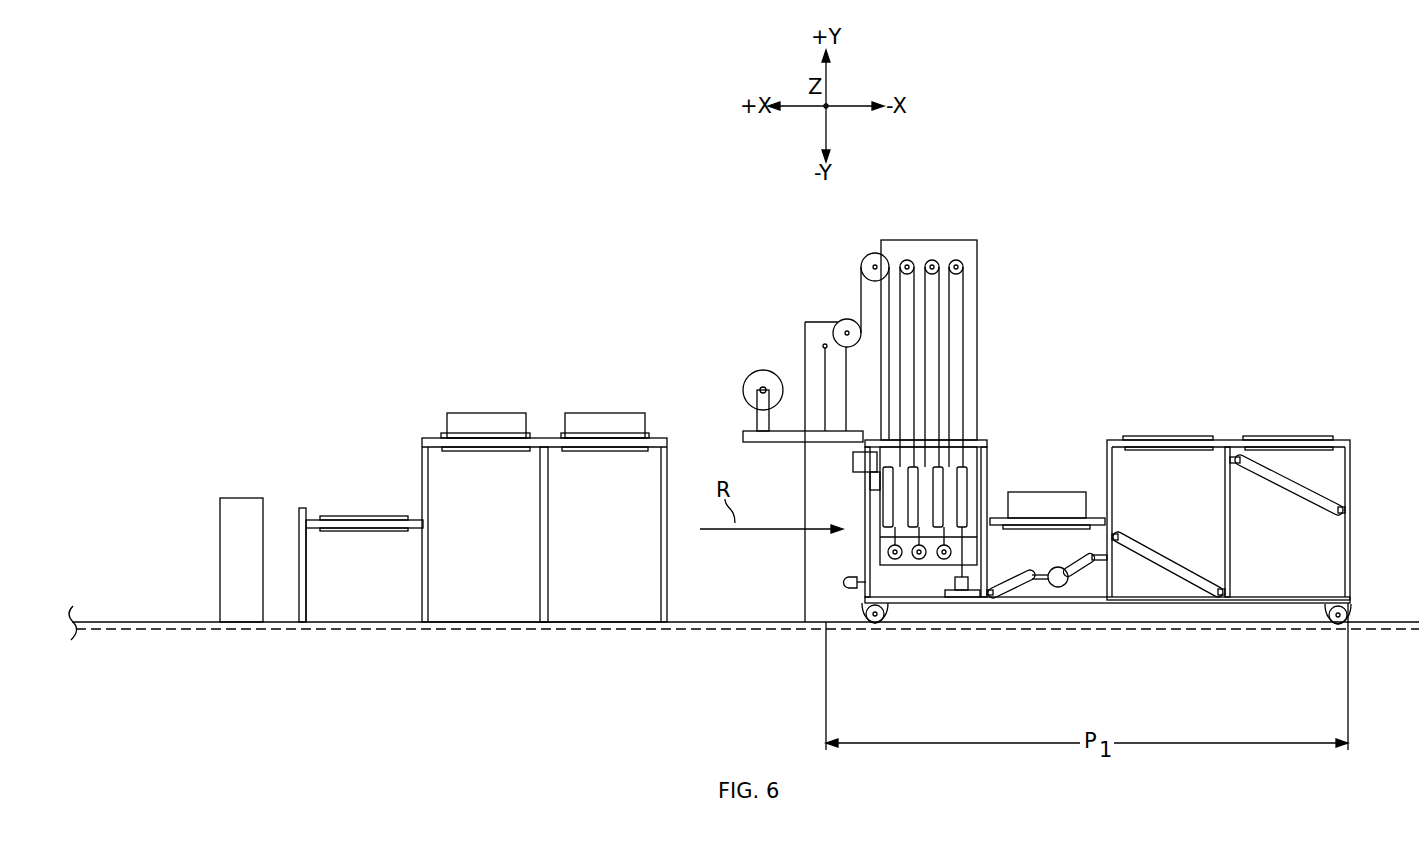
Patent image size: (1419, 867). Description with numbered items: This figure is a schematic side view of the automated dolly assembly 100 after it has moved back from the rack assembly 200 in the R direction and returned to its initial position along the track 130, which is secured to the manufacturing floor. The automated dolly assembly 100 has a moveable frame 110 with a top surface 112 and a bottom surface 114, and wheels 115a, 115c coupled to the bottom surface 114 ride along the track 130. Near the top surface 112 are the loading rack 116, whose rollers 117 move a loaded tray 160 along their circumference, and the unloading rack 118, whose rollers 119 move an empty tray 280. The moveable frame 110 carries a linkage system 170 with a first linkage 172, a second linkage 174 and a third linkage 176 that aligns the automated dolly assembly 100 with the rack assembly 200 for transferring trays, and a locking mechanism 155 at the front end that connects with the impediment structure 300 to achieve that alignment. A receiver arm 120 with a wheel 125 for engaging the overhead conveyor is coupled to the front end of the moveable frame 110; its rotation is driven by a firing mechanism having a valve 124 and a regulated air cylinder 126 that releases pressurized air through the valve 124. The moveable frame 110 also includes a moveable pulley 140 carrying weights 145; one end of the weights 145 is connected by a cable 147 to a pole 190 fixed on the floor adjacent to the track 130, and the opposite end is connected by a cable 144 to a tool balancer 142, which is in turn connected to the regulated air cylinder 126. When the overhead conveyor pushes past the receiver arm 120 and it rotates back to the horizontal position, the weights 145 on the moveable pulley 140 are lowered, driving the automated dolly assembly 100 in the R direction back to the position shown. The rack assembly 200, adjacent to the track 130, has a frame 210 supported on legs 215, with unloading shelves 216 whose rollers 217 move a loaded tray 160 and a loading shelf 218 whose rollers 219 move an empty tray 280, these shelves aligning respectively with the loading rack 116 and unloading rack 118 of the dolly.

The automated dolly assembly 100 is at (1262, 459).
The moveable frame 110 is at (1350, 482).
The top surface 112 is at (1225, 437).
The bottom surface 114 is at (1305, 606).
The wheel 115a is at (1345, 613).
The wheel 115c is at (877, 627).
The loading rack 116 is at (1113, 437).
The rollers 117 is at (1167, 450).
The unloading rack 118 is at (1002, 530).
The rollers 119 is at (1025, 528).
The receiver arm 120 is at (773, 442).
The valve 124 is at (853, 463).
The wheel 125 is at (760, 370).
The regulated air cylinder 126 is at (875, 502).
The track 130 is at (128, 622).
The moveable pulley 140 is at (892, 415).
The tool balancer 142 is at (955, 603).
The cable 144 is at (955, 578).
The weights 145 is at (968, 490).
The cable 147 is at (862, 267).
The locking mechanism 155 is at (848, 576).
The loaded tray 160 is at (478, 417).
The linkage system 170 is at (1166, 592).
The first linkage 172 is at (1012, 602).
The second linkage 174 is at (1190, 575).
The third linkage 176 is at (1287, 563).
The pole 190 is at (804, 322).
The rack assembly 200 is at (520, 495).
The frame 210 is at (548, 501).
The legs 215 is at (307, 578).
The unloading shelf 216 is at (428, 437).
The rollers 217 is at (483, 452).
The loading shelf 218 is at (312, 516).
The rollers 219 is at (374, 516).
The empty tray 280 is at (1063, 497).
The impediment structure 300 is at (237, 508).